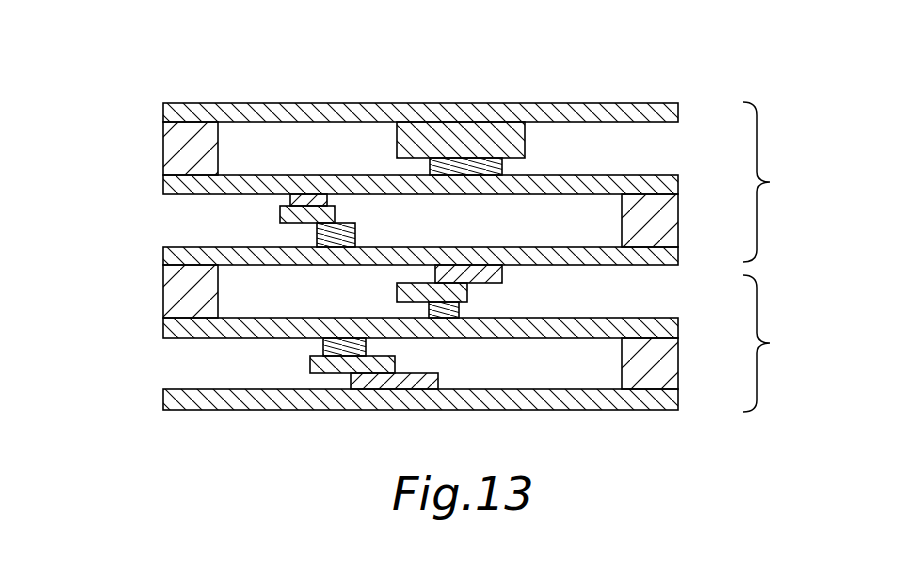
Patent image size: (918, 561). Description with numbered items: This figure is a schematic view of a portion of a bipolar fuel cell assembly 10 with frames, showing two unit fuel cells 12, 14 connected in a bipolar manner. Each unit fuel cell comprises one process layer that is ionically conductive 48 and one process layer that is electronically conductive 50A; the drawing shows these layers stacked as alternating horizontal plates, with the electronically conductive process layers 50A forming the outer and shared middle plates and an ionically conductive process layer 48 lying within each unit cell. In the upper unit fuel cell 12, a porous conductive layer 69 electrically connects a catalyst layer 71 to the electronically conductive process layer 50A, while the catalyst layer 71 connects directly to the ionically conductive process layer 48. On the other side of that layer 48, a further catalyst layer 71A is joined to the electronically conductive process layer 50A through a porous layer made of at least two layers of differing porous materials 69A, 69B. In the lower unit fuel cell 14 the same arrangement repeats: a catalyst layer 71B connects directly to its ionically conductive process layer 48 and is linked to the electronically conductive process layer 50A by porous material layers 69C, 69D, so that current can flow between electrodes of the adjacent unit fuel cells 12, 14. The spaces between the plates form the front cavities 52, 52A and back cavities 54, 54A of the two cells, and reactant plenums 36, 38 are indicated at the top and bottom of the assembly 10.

The bipolar fuel cell assembly 10 is at (121, 72).
The unit fuel cell 12 is at (771, 182).
The unit fuel cell 14 is at (771, 343).
The reactant plenum 36 is at (703, 103).
The reactant plenum 38 is at (150, 388).
The ionically conductive process layer 48 is at (679, 180).
The electronically conductive process layer 50A is at (163, 108).
The front cavity 52 is at (677, 148).
The front cavity 52A is at (677, 292).
The back cavity 54 is at (164, 221).
The back cavity 54A is at (164, 365).
The porous conductive layer 69 is at (527, 141).
The porous material layer 69A is at (280, 214).
The porous material layer 69B is at (357, 228).
The porous material layer 69C is at (396, 292).
The porous material layer 69D is at (502, 274).
The catalyst layer 71 is at (468, 166).
The catalyst layer 71A is at (316, 202).
The catalyst layer 71B is at (440, 310).